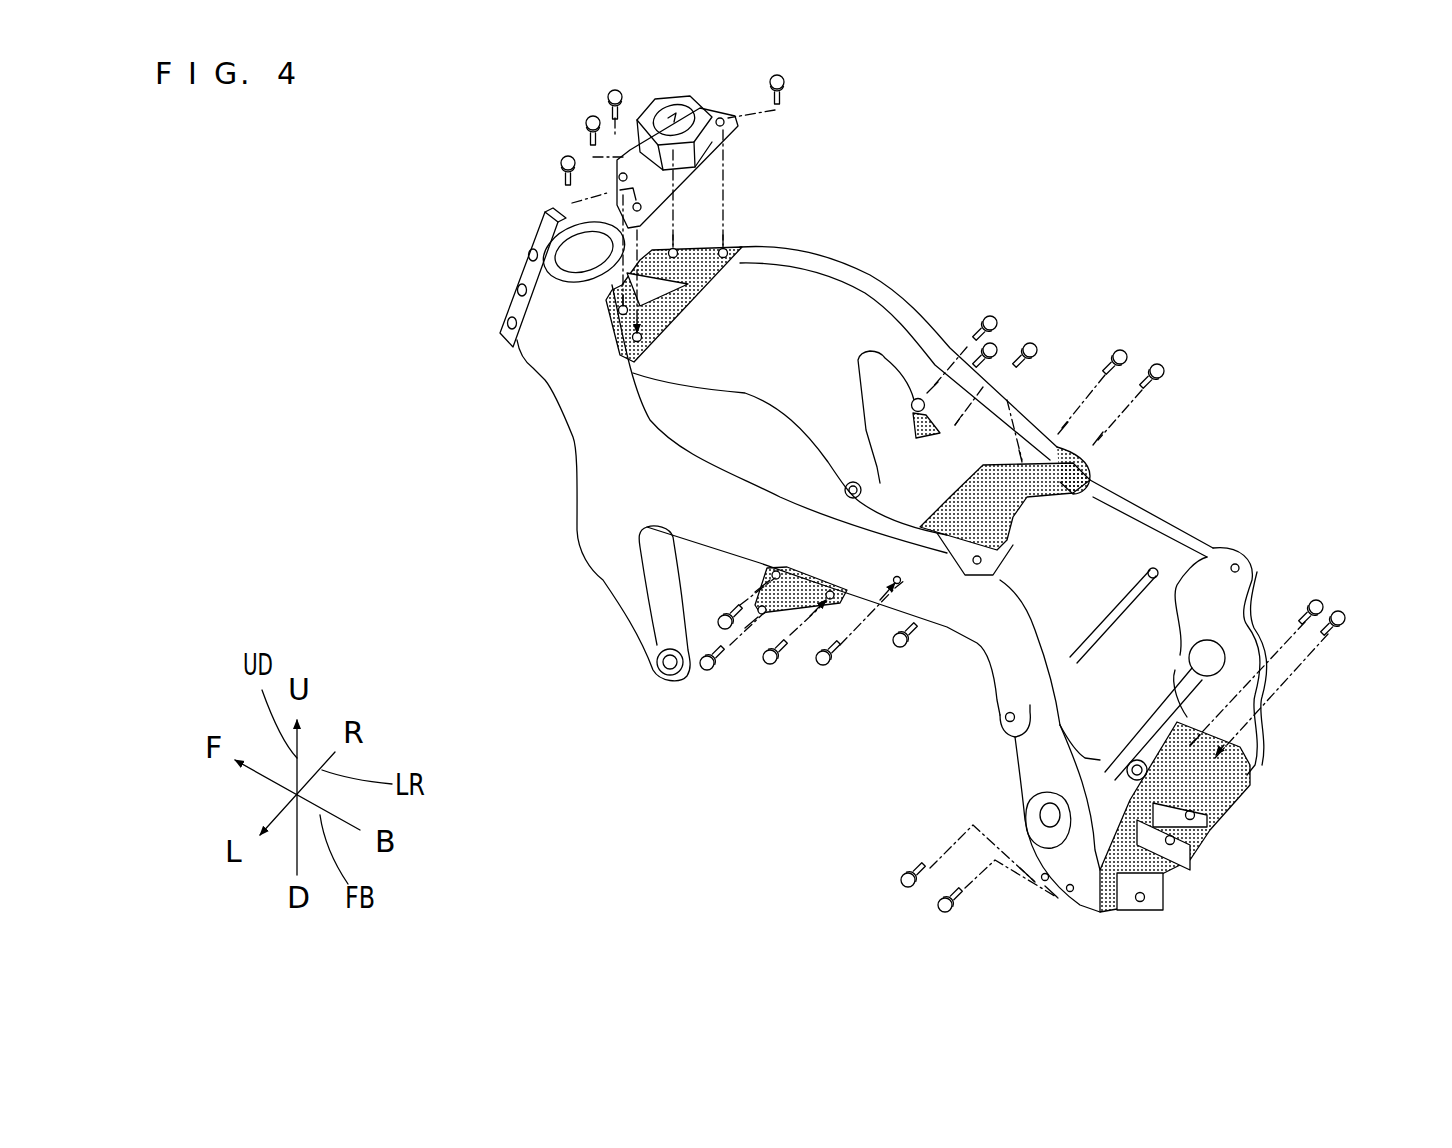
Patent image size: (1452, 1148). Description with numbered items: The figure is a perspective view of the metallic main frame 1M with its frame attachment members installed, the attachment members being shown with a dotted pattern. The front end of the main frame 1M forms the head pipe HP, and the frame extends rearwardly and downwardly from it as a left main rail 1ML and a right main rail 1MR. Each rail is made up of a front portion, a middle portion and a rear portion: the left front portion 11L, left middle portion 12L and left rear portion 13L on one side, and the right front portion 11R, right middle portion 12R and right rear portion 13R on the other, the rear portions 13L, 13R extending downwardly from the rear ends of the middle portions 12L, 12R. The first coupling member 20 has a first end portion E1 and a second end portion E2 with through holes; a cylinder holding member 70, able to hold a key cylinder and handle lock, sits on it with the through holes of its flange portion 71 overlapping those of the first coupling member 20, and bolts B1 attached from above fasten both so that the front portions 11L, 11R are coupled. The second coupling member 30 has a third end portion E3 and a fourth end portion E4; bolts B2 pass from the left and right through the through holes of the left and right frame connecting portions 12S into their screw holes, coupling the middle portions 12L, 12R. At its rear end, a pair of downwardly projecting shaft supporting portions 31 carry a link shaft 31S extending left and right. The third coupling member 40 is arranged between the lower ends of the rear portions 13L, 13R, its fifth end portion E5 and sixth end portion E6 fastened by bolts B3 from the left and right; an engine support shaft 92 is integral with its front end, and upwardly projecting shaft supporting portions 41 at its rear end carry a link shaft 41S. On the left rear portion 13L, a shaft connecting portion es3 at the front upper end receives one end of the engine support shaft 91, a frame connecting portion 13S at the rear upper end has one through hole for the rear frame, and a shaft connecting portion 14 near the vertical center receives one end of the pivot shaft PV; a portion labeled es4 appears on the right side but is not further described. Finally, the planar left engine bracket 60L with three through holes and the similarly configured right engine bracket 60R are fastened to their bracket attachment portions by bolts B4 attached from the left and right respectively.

The main frame 1M is at (455, 242).
The head pipe HP is at (540, 305).
The left front portion 11L is at (588, 407).
The left middle portion 12L is at (927, 530).
The left rear portion 13L is at (1035, 700).
The left main rail 1ML is at (808, 818).
The right front portion 11R is at (800, 257).
The right middle portion 12R is at (1022, 420).
The right rear portion 13R is at (1253, 629).
The right main rail 1MR is at (1345, 129).
The first end portion E1 is at (613, 323).
The second end portion E2 is at (690, 240).
The third end portion E3 is at (1027, 585).
The fourth end portion E4 is at (1097, 497).
The fifth end portion E5 is at (1117, 910).
The sixth end portion E6 is at (1237, 765).
The first coupling member 20 is at (680, 320).
The cylinder holding member 70 is at (668, 97).
The flange portion 71 is at (710, 118).
The bolts B1 is at (608, 107).
The bolts B2 is at (1123, 350).
The bolts B3 is at (903, 890).
The bolts B4 is at (993, 310).
The right engine bracket 60R is at (907, 421).
The left engine bracket 60L is at (787, 577).
The frame connecting portion 12S is at (1093, 463).
The frame connecting portion 13S is at (1257, 540).
The second coupling member 30 is at (983, 470).
The shaft supporting portions 31 is at (1027, 490).
The link shaft 31S is at (1020, 497).
The fourth engine support es4 is at (1153, 567).
The shaft connecting portion es3 is at (993, 700).
The engine support shaft 91 is at (1110, 622).
The pivot shaft PV is at (1160, 705).
The engine support shaft 92 is at (1095, 757).
The shaft connecting portion 14 is at (1013, 820).
The third coupling member 40 is at (1157, 870).
The shaft supporting portions 41 is at (1207, 843).
The link shaft 41S is at (1237, 817).